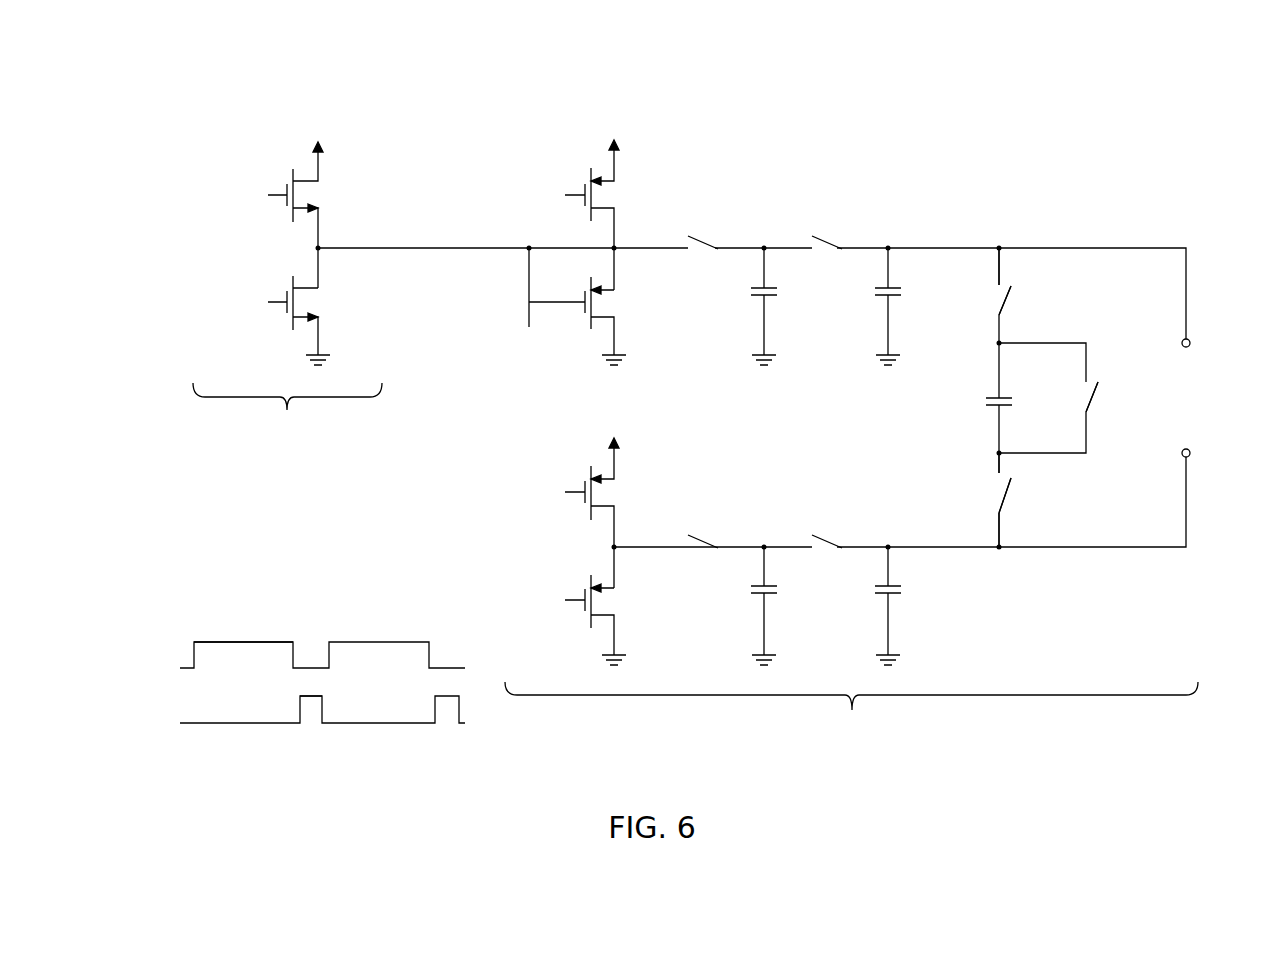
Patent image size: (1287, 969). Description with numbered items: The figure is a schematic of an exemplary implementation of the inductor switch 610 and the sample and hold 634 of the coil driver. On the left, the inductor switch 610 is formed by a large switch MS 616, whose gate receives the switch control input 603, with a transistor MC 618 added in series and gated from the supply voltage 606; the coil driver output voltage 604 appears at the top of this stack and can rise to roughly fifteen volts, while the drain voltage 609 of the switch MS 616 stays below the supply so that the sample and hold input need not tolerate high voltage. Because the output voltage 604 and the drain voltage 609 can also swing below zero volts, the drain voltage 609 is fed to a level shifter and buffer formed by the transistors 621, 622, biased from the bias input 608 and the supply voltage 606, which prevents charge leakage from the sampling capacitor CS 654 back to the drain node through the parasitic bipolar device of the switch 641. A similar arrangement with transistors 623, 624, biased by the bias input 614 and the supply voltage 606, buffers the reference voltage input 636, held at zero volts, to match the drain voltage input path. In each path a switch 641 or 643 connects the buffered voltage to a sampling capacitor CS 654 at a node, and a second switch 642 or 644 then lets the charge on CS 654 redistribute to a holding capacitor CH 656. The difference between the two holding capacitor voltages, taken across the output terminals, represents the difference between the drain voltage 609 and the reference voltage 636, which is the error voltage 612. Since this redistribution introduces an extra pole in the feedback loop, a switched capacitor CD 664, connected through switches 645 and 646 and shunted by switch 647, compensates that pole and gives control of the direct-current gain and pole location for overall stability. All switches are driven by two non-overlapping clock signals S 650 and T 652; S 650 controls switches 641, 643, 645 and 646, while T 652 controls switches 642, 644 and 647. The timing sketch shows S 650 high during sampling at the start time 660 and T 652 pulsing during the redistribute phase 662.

The VSW switch control input 603 is at (212, 298).
The coil driver output voltage VL 604 is at (340, 128).
The VDD supply voltage 606 is at (212, 190).
The VBP bias input 608 is at (512, 193).
The drain voltage VLD 609 is at (505, 345).
The inductor switch 610 is at (287, 416).
The voltage difference VER 612 is at (1210, 398).
The VBP bias input 614 is at (512, 492).
The switch MS 616 is at (357, 315).
The transistor MC 618 is at (357, 206).
The MOSFET M1 621 is at (650, 316).
The MOSFET M2 622 is at (648, 186).
The transistor M3 623 is at (650, 616).
The transistor M4 624 is at (650, 485).
The sample and hold circuit 634 is at (851, 717).
The reference voltage input VREF 636 is at (508, 603).
The switch S1 641 is at (720, 266).
The node 642 is at (844, 266).
The node 643 is at (720, 565).
The node 644 is at (844, 565).
The switch S5 645 is at (973, 283).
The switch S6 646 is at (975, 506).
The switch S7 647 is at (1066, 380).
The clock signal S 650 is at (707, 198).
The clock signal T 652 is at (829, 198).
The sampling capacitor CS 654 is at (805, 326).
The holding capacitor CH 656 is at (935, 331).
The sampling at start time TST 660 is at (287, 656).
The redistribute phase 662 is at (318, 688).
The switched capacitor CD 664 is at (942, 405).